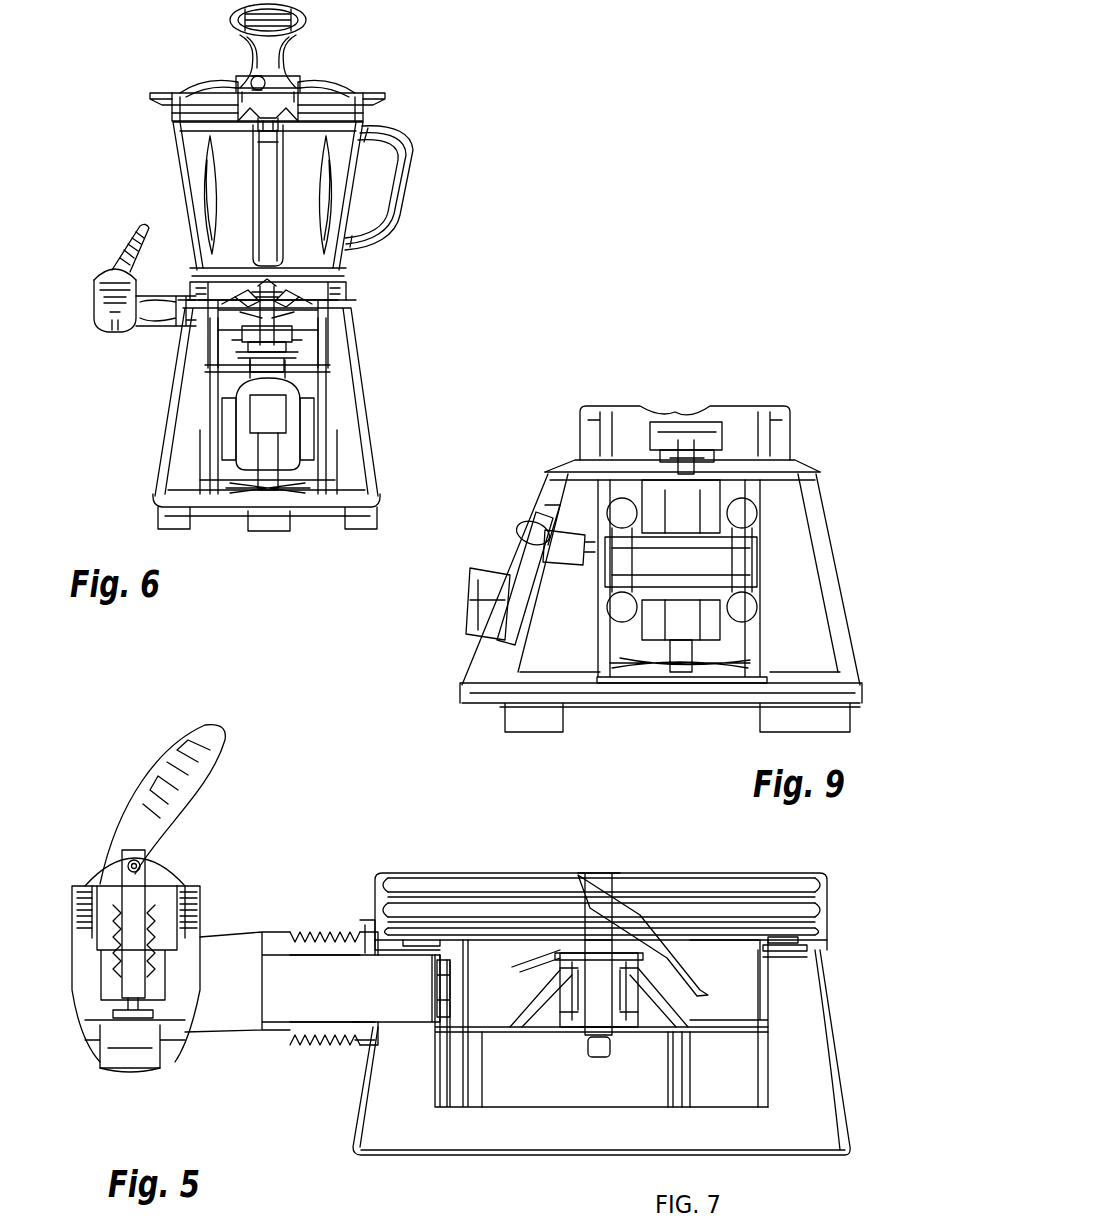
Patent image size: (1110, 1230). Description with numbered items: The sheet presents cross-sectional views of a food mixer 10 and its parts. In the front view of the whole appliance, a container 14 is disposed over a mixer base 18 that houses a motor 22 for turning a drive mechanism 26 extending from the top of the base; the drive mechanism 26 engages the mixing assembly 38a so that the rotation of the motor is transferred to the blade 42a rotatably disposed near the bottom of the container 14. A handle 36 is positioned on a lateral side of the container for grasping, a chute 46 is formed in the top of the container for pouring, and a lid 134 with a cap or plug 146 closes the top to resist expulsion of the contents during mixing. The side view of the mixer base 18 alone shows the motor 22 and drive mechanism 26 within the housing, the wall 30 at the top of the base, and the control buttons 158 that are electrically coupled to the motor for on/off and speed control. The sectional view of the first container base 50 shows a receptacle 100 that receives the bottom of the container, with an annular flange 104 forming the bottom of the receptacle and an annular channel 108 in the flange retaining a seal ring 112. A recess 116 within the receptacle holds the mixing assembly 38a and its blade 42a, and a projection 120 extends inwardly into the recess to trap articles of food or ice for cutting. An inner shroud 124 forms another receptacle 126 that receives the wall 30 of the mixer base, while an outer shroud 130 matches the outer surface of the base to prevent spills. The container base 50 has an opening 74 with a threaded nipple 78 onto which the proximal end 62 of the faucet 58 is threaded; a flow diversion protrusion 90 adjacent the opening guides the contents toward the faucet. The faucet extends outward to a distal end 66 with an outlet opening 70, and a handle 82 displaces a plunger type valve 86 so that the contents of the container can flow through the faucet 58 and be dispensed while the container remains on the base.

In FIG. 6, the food mixer 10 is at (392, 425).
In FIG. 6, the container 14 is at (172, 175).
In FIG. 6, the mixer base 18 is at (165, 495).
In FIG. 9, the mixer base 18 is at (848, 622).
In FIG. 6, the motor 22 is at (247, 434).
In FIG. 9, the motor 22 is at (757, 512).
In FIG. 6, the drive mechanism 26 is at (317, 370).
In FIG. 9, the drive mechanism 26 is at (645, 422).
In FIG. 9, the receptacle or wall 30 is at (780, 406).
In FIG. 6, the handle 36 is at (412, 180).
In FIG. 6, the mixing assembly 38a is at (305, 313).
In FIG. 5, the mixing assembly 38a is at (588, 930).
In FIG. 6, the blade 42a is at (312, 286).
In FIG. 5, the blade 42a is at (510, 962).
In FIG. 6, the chute 46 is at (155, 100).
In FIG. 6, the first container base 50 is at (345, 295).
In FIG. 5, the first container base 50 is at (805, 1158).
In FIG. 6, the faucet 58 is at (97, 303).
In FIG. 5, the faucet 58 is at (72, 962).
In FIG. 5, the proximal end 62 is at (300, 1040).
In FIG. 5, the distal end 66 is at (90, 1060).
In FIG. 5, the outlet opening 70 is at (118, 1050).
In FIG. 5, the opening 74 is at (445, 988).
In FIG. 5, the threaded nipple 78 is at (305, 973).
In FIG. 5, the handle 82 is at (162, 740).
In FIG. 5, the plunger type valve 86 is at (130, 908).
In FIG. 5, the flow diversion protrusion 90 is at (450, 968).
In FIG. 5, the receptacle 100 is at (790, 900).
In FIG. 5, the annular flange 104 is at (773, 957).
In FIG. 5, the annular channel 108 is at (800, 940).
In FIG. 5, the seal ring 112 is at (393, 930).
In FIG. 5, the recess 116 is at (747, 997).
In FIG. 5, the projection 120 is at (693, 1000).
In FIG. 5, the inner shroud 124 is at (445, 1098).
In FIG. 5, the receptacle 126 is at (623, 1120).
In FIG. 5, the outer shroud 130 is at (348, 1125).
In FIG. 6, the lid 134 is at (345, 92).
In FIG. 6, the cap or plug 146 is at (258, 83).
In FIG. 9, the buttons 158 is at (522, 520).